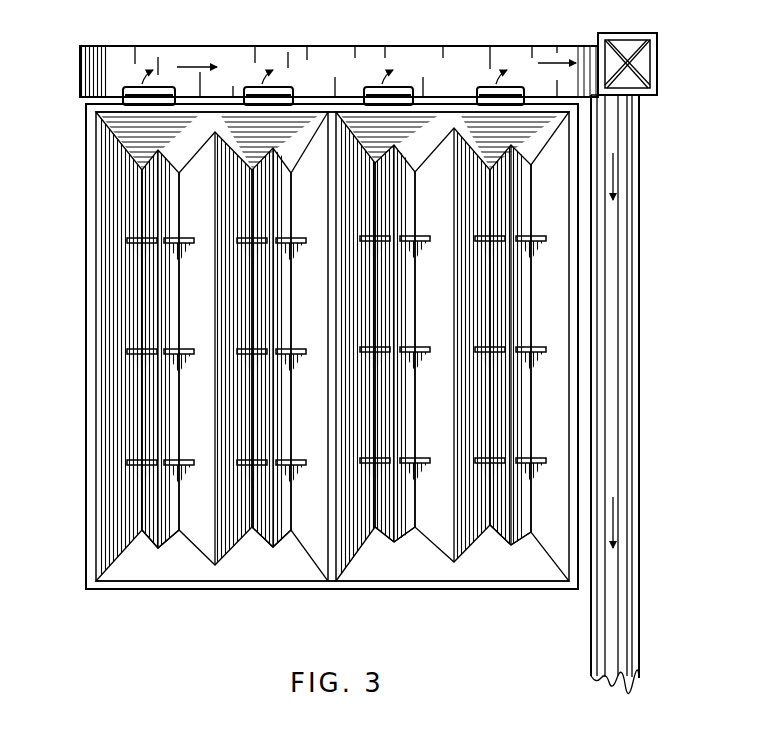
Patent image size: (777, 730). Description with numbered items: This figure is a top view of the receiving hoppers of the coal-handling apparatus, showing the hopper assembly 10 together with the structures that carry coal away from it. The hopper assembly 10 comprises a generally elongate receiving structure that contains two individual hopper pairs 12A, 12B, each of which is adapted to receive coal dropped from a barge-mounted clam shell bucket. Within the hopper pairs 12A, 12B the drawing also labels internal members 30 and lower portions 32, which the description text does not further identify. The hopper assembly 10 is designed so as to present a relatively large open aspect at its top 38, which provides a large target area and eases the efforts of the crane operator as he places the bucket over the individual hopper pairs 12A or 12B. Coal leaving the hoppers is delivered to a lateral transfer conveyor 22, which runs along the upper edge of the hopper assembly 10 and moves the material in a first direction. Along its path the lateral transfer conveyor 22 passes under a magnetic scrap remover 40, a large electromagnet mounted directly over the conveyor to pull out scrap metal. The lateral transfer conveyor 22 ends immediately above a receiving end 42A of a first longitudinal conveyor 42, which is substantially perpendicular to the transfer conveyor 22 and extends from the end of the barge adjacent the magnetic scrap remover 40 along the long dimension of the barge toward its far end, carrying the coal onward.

The hopper assembly 10 is at (140, 590).
The hopper pair 12A is at (240, 568).
The hopper pair 12B is at (475, 562).
The lateral transfer conveyor 22 is at (403, 45).
The spacer rod assembly 30 is at (167, 317).
The pleat bottom fold 32 is at (176, 552).
The top 38 is at (185, 395).
The magnetic scrap remover 40 is at (657, 65).
The first longitudinal conveyor 42 is at (625, 353).
The receiving end 42A is at (618, 98).